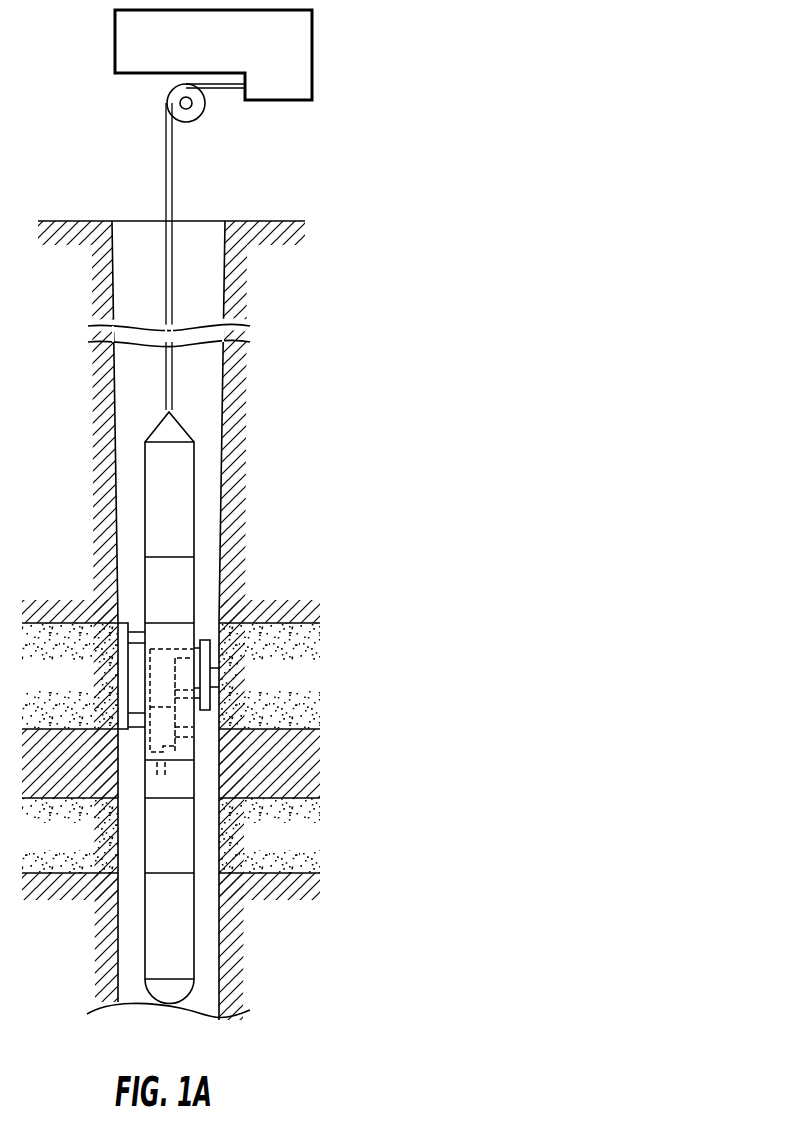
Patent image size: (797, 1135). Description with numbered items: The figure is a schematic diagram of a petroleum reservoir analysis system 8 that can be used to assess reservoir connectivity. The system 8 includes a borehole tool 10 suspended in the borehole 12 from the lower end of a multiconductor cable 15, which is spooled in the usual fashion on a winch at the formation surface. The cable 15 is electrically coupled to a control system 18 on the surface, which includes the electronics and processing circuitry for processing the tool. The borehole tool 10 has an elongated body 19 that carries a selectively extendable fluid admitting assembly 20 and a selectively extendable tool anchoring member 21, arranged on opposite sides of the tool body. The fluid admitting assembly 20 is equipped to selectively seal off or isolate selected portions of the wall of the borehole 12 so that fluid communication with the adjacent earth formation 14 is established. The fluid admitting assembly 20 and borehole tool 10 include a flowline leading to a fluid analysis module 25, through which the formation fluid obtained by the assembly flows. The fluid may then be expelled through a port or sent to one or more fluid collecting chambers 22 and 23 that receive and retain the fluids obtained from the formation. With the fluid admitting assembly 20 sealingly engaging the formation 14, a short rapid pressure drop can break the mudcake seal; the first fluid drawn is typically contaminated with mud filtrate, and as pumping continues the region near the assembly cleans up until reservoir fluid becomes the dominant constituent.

The petroleum reservoir analysis system 8 is at (440, 67).
The control system 18 is at (282, 100).
The multiconductor cable 15 is at (166, 156).
The borehole 12 is at (225, 271).
The earth formation 14 is at (281, 685).
The borehole tool 10 is at (196, 541).
The elongated body 19 is at (178, 495).
The fluid admitting assembly 20 is at (210, 650).
The tool anchoring member 21 is at (120, 683).
The fluid collecting chamber 22 is at (180, 837).
The fluid collecting chamber 23 is at (180, 934).
The fluid analysis module 25 is at (158, 735).